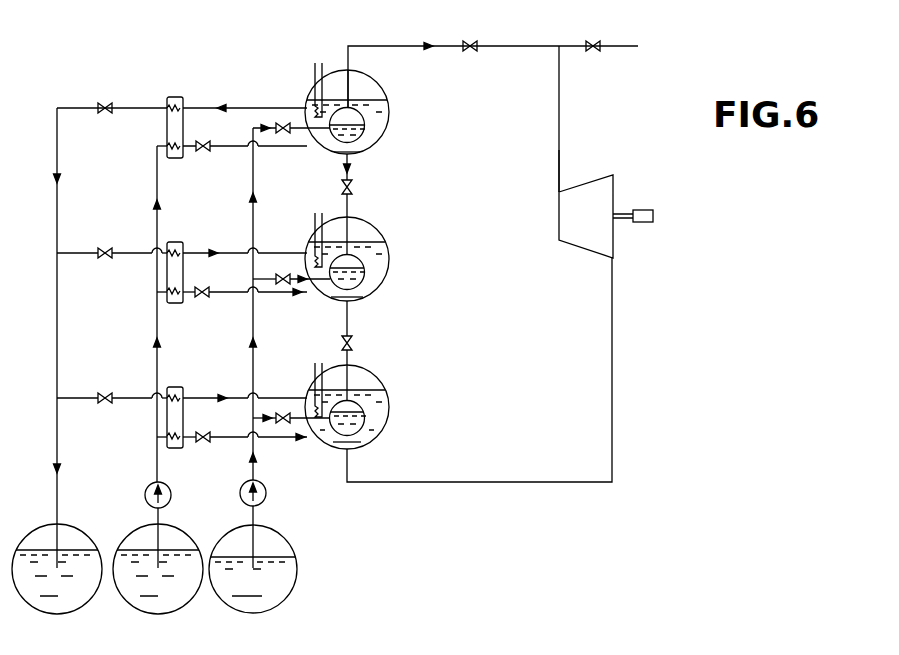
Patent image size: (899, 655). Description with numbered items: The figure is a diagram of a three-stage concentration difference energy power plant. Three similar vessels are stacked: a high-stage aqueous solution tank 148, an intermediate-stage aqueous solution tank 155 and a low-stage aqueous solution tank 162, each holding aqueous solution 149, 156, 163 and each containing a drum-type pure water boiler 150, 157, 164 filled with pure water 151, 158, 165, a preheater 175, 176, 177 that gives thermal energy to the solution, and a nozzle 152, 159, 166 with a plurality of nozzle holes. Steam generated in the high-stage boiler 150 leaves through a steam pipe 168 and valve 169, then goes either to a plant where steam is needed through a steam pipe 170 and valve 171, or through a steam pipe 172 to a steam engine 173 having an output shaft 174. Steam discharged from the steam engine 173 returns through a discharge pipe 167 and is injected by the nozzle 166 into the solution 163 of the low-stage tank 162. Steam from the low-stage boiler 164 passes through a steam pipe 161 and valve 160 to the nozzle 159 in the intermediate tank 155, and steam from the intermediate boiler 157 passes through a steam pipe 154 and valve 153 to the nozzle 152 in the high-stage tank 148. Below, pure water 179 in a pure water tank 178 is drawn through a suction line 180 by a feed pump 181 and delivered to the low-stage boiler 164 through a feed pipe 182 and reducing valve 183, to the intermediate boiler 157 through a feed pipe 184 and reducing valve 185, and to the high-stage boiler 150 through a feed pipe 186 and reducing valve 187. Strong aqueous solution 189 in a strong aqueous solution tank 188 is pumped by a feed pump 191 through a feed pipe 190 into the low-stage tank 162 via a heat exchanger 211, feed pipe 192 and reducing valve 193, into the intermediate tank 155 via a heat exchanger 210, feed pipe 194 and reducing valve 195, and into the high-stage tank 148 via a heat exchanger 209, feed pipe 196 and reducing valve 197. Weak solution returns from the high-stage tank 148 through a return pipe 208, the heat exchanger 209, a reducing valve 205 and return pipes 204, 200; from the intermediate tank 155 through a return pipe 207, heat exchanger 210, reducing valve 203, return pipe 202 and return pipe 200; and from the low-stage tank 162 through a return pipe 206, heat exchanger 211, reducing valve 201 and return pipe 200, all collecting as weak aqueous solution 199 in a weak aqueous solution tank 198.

The high-stage aqueous solution tank 148 is at (380, 83).
The aqueous solution 149 is at (380, 99).
The pure water boiler 150 is at (363, 116).
The pure water 151 is at (364, 128).
The nozzle 152 is at (360, 152).
The valve 153 is at (354, 187).
The steam pipe 154 is at (349, 208).
The intermediate-stage aqueous solution tank 155 is at (385, 240).
The aqueous solution 156 is at (375, 262).
The pure water boiler 157 is at (364, 276).
The pure water 158 is at (370, 293).
The nozzle 159 is at (356, 300).
The valve 160 is at (354, 344).
The steam pipe 161 is at (362, 366).
The low-stage aqueous solution tank 162 is at (382, 388).
The aqueous solution 163 is at (380, 405).
The pure water boiler 164 is at (365, 418).
The pure water 165 is at (364, 428).
The nozzle 166 is at (352, 448).
The discharge pipe 167 is at (520, 482).
The steam pipe 168 is at (392, 45).
The valve 169 is at (477, 40).
The steam pipe 170 is at (570, 44).
The valve 171 is at (598, 40).
The steam pipe 172 is at (560, 153).
The steam engine 173 is at (614, 175).
The output shaft 174 is at (652, 211).
The preheater 175 is at (323, 66).
The preheater 176 is at (323, 216).
The preheater 177 is at (322, 366).
The pure water tank 178 is at (266, 612).
The pure water 179 is at (278, 606).
The suction conduit 180 is at (255, 515).
The feed pump 181 is at (266, 494).
The feed pipe 182 is at (258, 424).
The reducing valve 183 is at (288, 412).
The feed pipe 184 is at (260, 293).
The reducing valve 185 is at (286, 274).
The feed pipe 186 is at (253, 138).
The reducing valve 187 is at (286, 122).
The strong aqueous solution tank 188 is at (158, 612).
The strong aqueous solution 189 is at (174, 608).
The feed pipe 190 is at (160, 516).
The feed pump 191 is at (147, 486).
The feed pipe 192 is at (193, 440).
The reducing valve 193 is at (205, 432).
The feed pipe 194 is at (190, 296).
The reducing valve 195 is at (202, 286).
The feed pipe 196 is at (198, 144).
The reducing valve 197 is at (212, 148).
The weak aqueous solution tank 198 is at (68, 612).
The weak aqueous solution 199 is at (48, 610).
The return pipe 200 is at (58, 492).
The reducing valve 201 is at (105, 396).
The return pipe 202 is at (70, 252).
The reducing valve 203 is at (106, 250).
The return pipe 204 is at (71, 107).
The reducing valve 205 is at (105, 101).
The return pipe 206 is at (210, 398).
The return pipe 207 is at (205, 252).
The return pipe 208 is at (232, 106).
The heat exchanger 209 is at (178, 97).
The heat exchanger 210 is at (180, 242).
The heat exchanger 211 is at (185, 388).